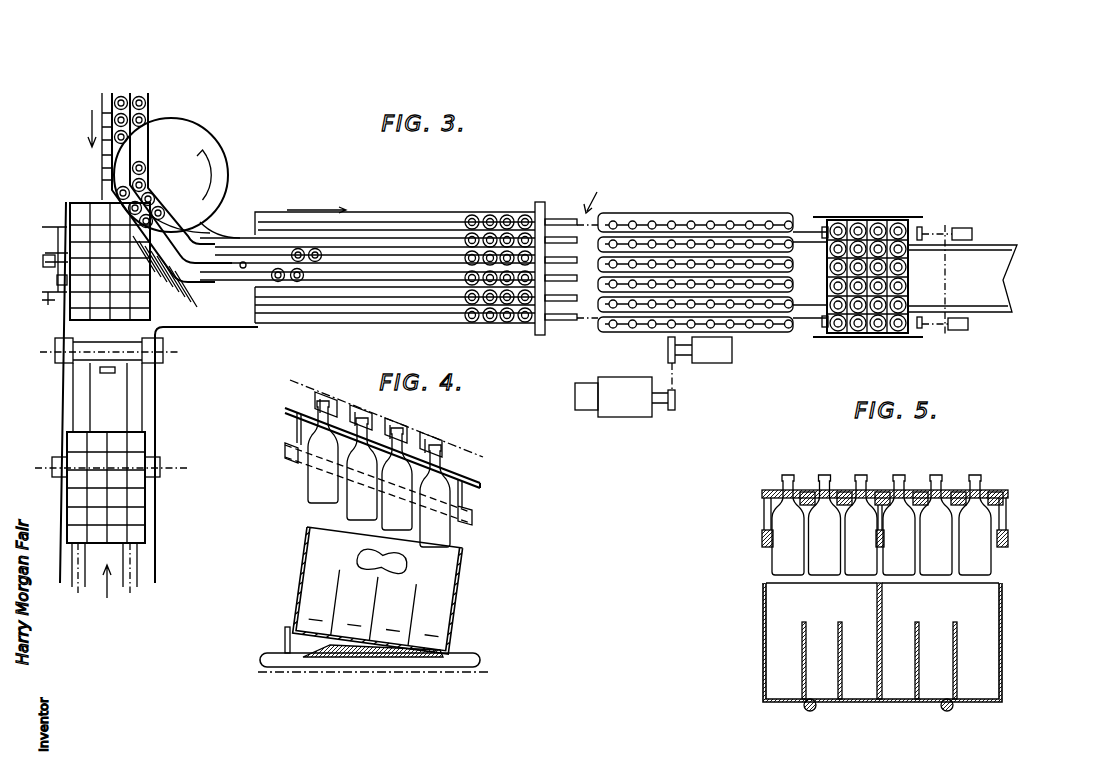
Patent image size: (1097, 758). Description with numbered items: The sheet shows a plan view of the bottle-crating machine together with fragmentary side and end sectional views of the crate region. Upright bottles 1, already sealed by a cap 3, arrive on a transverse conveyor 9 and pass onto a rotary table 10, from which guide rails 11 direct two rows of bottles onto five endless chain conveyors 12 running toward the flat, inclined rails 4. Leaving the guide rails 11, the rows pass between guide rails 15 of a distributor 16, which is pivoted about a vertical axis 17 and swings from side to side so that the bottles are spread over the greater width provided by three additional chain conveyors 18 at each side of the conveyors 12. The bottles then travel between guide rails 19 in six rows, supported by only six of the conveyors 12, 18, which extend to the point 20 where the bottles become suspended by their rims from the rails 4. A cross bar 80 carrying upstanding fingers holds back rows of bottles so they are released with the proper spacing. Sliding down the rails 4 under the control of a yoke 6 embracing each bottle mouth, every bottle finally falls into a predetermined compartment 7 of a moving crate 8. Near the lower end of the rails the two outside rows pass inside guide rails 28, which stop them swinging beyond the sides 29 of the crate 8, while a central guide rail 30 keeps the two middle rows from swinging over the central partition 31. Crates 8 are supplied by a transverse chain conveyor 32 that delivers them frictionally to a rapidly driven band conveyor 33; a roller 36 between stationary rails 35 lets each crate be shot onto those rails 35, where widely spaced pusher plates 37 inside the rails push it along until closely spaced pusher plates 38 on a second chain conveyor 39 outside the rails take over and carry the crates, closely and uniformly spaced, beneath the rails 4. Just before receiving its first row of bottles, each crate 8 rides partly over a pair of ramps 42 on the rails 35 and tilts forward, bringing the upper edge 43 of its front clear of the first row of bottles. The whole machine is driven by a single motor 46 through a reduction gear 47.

In FIG. 3, the bottle 1 is at (150, 104).
In FIG. 4, the bottle 1 is at (353, 508).
In FIG. 5, the bottle 1 is at (857, 560).
In FIG. 3, the cap 3 is at (770, 346).
In FIG. 3, the rails 4 is at (718, 240).
In FIG. 4, the rails 4 is at (457, 477).
In FIG. 5, the rails 4 is at (803, 493).
In FIG. 4, the yoke 6 is at (445, 456).
In FIG. 3, the compartment 7 is at (120, 457).
In FIG. 4, the compartment 7 is at (376, 608).
In FIG. 5, the compartment 7 is at (980, 671).
In FIG. 3, the crate 8 is at (887, 220).
In FIG. 4, the crate 8 is at (452, 621).
In FIG. 5, the crate 8 is at (848, 700).
In FIG. 3, the transverse conveyor 9 is at (142, 125).
In FIG. 3, the rotary table 10 is at (195, 136).
In FIG. 3, the guide rails 11 is at (165, 232).
In FIG. 3, the endless chain conveyors 12 is at (175, 297).
In FIG. 3, the guide rails 15 is at (352, 250).
In FIG. 3, the distributor 16 is at (275, 233).
In FIG. 3, the vertical axis 17 is at (245, 262).
In FIG. 3, the additional chain conveyors 18 is at (375, 240).
In FIG. 3, the guide rails 19 is at (425, 248).
In FIG. 3, the point 20 is at (596, 190).
In FIG. 4, the guide rails 28 is at (470, 511).
In FIG. 5, the guide rails 28 is at (762, 539).
In FIG. 4, the sides 29 is at (313, 546).
In FIG. 5, the sides 29 is at (765, 612).
In FIG. 5, the central guide rail 30 is at (884, 539).
In FIG. 5, the central partition 31 is at (883, 600).
In FIG. 3, the transverse chain conveyor 32 is at (136, 560).
In FIG. 3, the band conveyor 33 is at (149, 406).
In FIG. 3, the stationary rails 35 is at (52, 308).
In FIG. 4, the stationary rails 35 is at (431, 665).
In FIG. 5, the stationary rails 35 is at (806, 702).
In FIG. 3, the roller 36 is at (60, 258).
In FIG. 3, the pusher plates 37 is at (74, 260).
In FIG. 3, the pusher plates 38 is at (964, 228).
In FIG. 4, the pusher plates 38 is at (335, 667).
In FIG. 3, the second chain conveyor 39 is at (920, 317).
In FIG. 4, the second chain conveyor 39 is at (284, 641).
In FIG. 4, the ramps 42 is at (380, 656).
In FIG. 4, the upper edge 43 is at (463, 551).
In FIG. 3, the motor 46 is at (634, 400).
In FIG. 3, the reduction gear 47 is at (708, 357).
In FIG. 3, the cross bar 80 is at (538, 212).